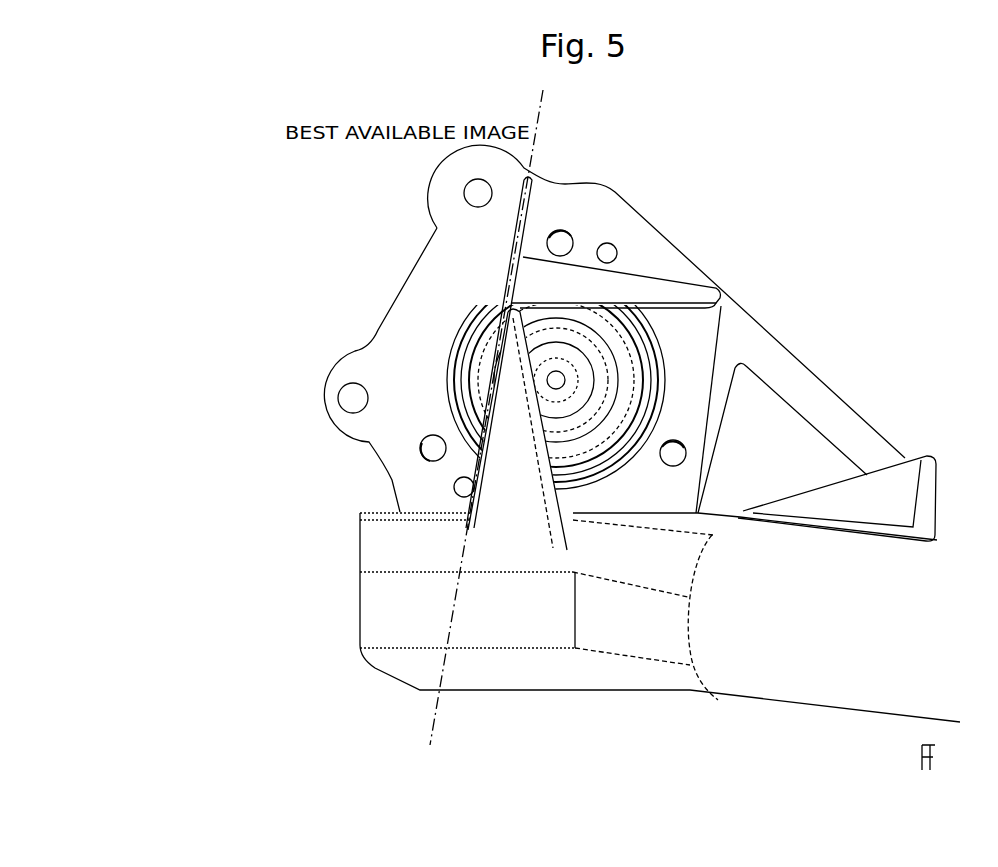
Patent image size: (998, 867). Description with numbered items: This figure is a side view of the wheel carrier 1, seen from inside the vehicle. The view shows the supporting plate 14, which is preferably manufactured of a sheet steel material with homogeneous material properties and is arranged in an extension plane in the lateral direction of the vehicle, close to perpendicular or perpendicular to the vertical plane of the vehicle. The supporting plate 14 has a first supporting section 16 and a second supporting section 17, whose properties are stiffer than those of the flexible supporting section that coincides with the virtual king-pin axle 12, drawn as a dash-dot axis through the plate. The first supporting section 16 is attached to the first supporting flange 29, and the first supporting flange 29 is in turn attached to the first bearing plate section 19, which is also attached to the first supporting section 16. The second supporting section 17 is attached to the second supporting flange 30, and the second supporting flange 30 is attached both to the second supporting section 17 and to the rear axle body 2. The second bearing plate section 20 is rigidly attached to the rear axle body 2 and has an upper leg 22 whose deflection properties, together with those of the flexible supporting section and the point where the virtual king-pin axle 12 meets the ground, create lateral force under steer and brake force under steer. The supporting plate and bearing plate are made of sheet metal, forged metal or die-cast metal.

The wheel carrier 1 is at (845, 158).
The rear axle body 2 is at (755, 683).
The virtual king-pin axle 12 is at (437, 708).
The supporting plate 14 is at (352, 352).
The first supporting section 16 is at (352, 352).
The second supporting section 17 is at (510, 263).
The first bearing plate section 19 is at (607, 205).
The second bearing plate section 20 is at (840, 427).
The upper leg 22 is at (793, 388).
The first supporting flange 29 is at (655, 293).
The second supporting flange 30 is at (510, 487).